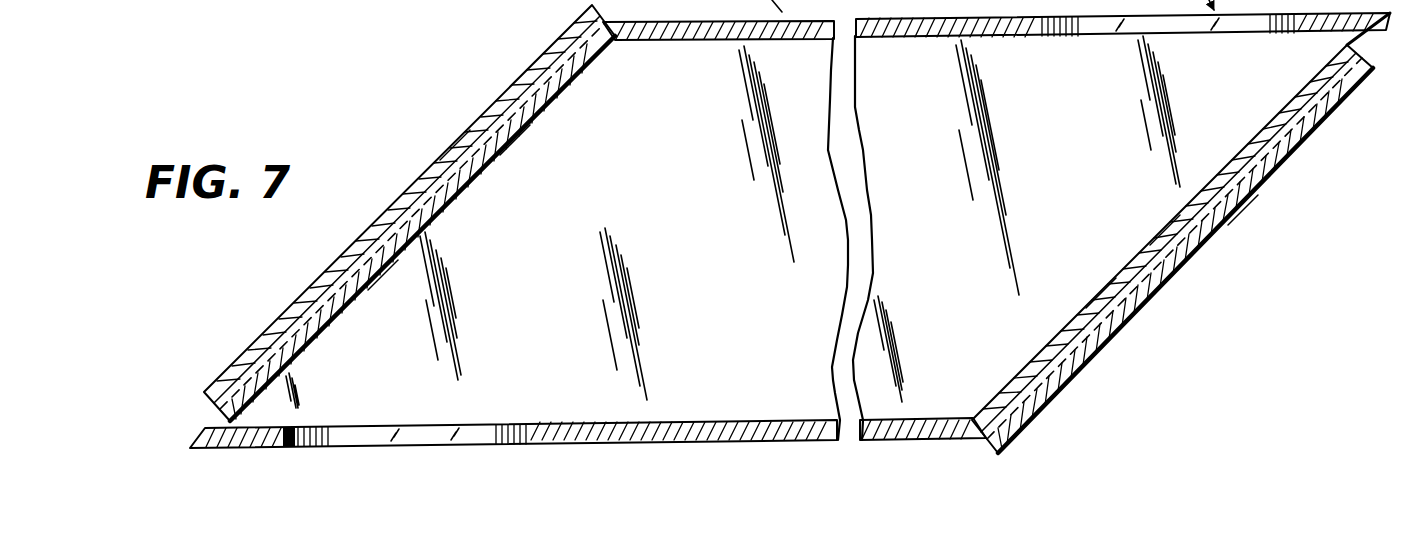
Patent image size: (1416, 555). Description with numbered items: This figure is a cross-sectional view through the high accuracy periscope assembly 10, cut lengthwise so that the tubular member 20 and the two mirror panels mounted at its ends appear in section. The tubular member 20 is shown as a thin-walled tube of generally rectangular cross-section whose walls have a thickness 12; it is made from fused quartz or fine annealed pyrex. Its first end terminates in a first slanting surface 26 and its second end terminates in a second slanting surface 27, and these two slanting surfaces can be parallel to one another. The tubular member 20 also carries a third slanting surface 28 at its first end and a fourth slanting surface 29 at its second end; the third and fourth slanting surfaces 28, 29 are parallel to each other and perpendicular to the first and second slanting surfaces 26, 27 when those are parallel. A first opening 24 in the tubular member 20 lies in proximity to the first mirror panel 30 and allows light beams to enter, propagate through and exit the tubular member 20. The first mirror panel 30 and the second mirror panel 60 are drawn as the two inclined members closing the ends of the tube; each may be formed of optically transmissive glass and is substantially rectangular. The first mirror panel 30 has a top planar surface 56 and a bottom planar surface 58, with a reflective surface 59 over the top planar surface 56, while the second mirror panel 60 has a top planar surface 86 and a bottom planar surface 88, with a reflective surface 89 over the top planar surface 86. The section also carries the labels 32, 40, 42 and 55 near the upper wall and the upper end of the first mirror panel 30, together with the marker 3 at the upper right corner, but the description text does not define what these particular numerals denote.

The high accuracy periscope assembly 10 is at (1159, 385).
The thickness 12 is at (772, 420).
The tubular member 20 is at (957, 442).
The first opening 24 is at (292, 445).
The first slanting surface 26 is at (211, 420).
The second slanting surface 27 is at (1370, 42).
The third slanting surface 28 is at (616, 45).
The fourth slanting surface 29 is at (975, 414).
The first mirror panel 30 is at (282, 312).
The upper frame member 32 is at (823, 20).
The upper member portion 40 is at (770, 6).
The upper member portion 42 is at (476, 6).
The panel end cap 55 is at (585, 14).
The top planar surface 56 is at (514, 138).
The bottom planar surface 58 is at (461, 136).
The reflective surface 59 is at (386, 270).
The second mirror panel 60 is at (1151, 304).
The top planar surface 86 is at (1158, 236).
The bottom planar surface 88 is at (1243, 213).
The reflective surface 89 is at (1094, 299).
The section line 3 is at (1409, 0).